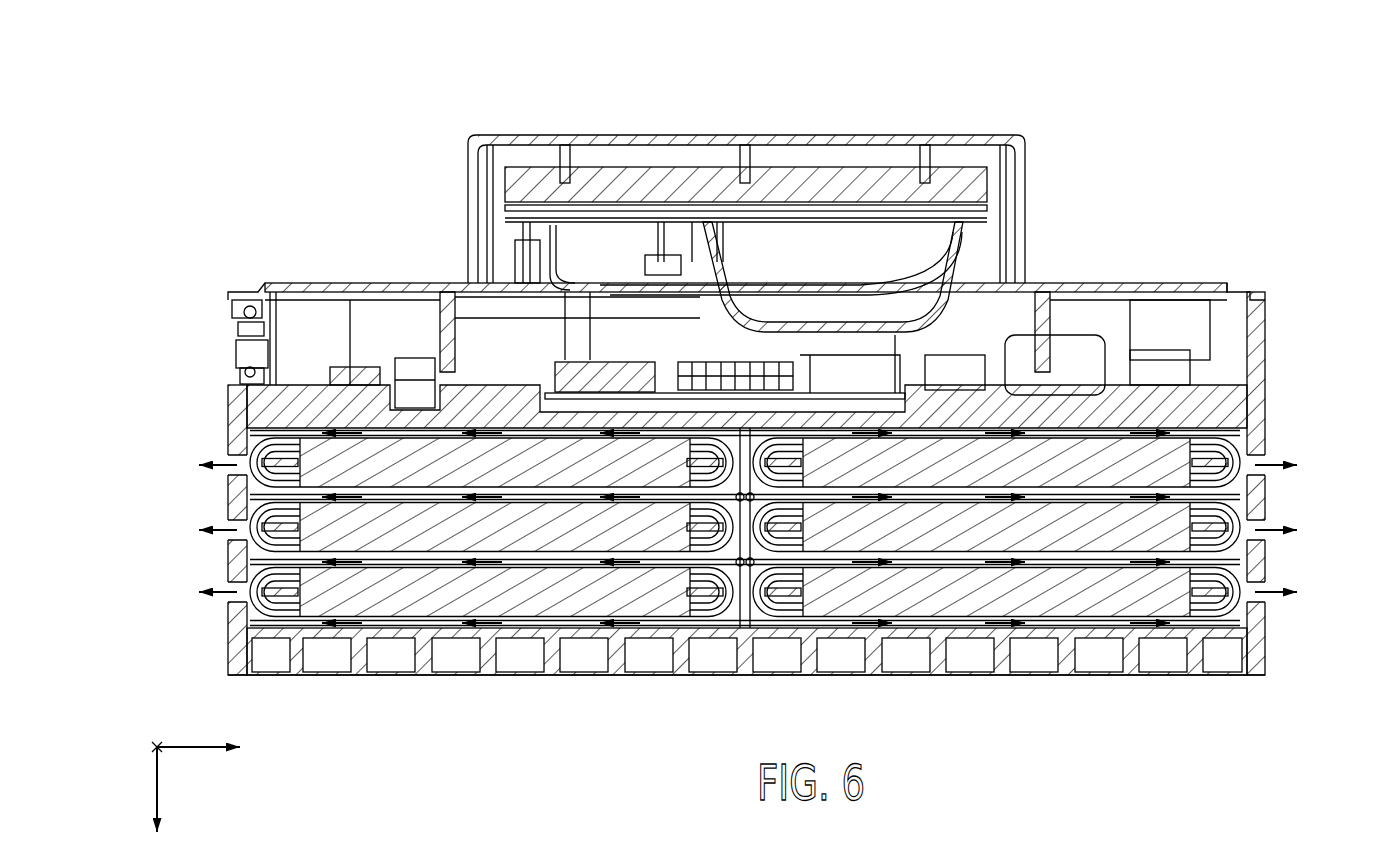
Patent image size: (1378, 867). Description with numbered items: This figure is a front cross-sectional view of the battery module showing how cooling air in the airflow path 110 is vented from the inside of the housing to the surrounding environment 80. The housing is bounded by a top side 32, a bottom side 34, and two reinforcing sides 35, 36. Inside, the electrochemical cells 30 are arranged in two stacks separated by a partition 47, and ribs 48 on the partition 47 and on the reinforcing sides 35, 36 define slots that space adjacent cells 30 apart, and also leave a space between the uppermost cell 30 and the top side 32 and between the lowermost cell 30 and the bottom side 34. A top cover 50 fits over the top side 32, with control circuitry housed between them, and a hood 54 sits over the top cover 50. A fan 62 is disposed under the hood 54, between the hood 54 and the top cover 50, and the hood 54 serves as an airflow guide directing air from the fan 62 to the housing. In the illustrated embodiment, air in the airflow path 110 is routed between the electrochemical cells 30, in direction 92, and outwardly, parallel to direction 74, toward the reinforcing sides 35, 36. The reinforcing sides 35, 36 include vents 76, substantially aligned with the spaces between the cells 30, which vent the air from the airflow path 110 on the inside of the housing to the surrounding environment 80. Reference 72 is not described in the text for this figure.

The electrochemical cells 30 is at (488, 476).
The top side 32 is at (340, 405).
The bottom side 34 is at (980, 677).
The reinforcing side 35 is at (1250, 418).
The reinforcing side 36 is at (240, 418).
The partition 47 is at (745, 640).
The ribs 48 is at (257, 560).
The top cover 50 is at (378, 288).
The hood 54 is at (860, 121).
The fan 62 is at (832, 240).
The vertical axis 72 is at (157, 787).
The direction 74 is at (195, 745).
The vents 76 is at (250, 602).
The surrounding environment 80 is at (154, 551).
The direction 92 is at (150, 747).
The airflow path 110 is at (398, 564).